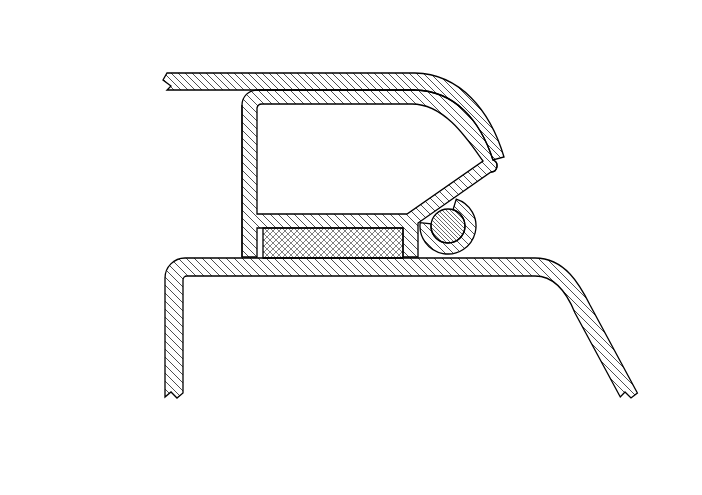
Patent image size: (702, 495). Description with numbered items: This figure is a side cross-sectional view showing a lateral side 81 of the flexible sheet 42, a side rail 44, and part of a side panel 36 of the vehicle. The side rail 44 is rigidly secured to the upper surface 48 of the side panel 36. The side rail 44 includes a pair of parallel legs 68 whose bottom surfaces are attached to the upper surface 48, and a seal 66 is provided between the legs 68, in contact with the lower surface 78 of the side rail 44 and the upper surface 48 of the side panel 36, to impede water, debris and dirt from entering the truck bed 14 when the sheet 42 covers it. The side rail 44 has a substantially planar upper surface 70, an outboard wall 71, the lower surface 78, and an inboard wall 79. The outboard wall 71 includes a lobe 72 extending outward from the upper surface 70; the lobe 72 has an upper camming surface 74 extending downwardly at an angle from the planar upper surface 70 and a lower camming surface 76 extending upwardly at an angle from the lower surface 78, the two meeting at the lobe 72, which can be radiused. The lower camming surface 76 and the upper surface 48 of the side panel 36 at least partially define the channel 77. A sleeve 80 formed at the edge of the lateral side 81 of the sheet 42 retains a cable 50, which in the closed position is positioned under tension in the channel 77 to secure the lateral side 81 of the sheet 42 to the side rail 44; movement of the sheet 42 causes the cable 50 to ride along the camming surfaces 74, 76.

The truck bed 14 is at (40, 256).
The side panel 36 is at (200, 343).
The sheet 42 is at (391, 72).
The side rail 44 is at (210, 132).
The upper surface 48 is at (203, 256).
The cable 50 is at (465, 232).
The seal 66 is at (364, 247).
The legs 68 is at (243, 254).
The upper surface 70 is at (307, 90).
The outboard wall 71 is at (440, 160).
The lobe 72 is at (503, 157).
The upper camming surface 74 is at (473, 97).
The lower camming surface 76 is at (490, 180).
The channel 77 is at (527, 215).
The lower surface 78 is at (307, 258).
The inboard wall 79 is at (242, 158).
The sleeve 80 is at (478, 218).
The lateral side 81 is at (573, 147).